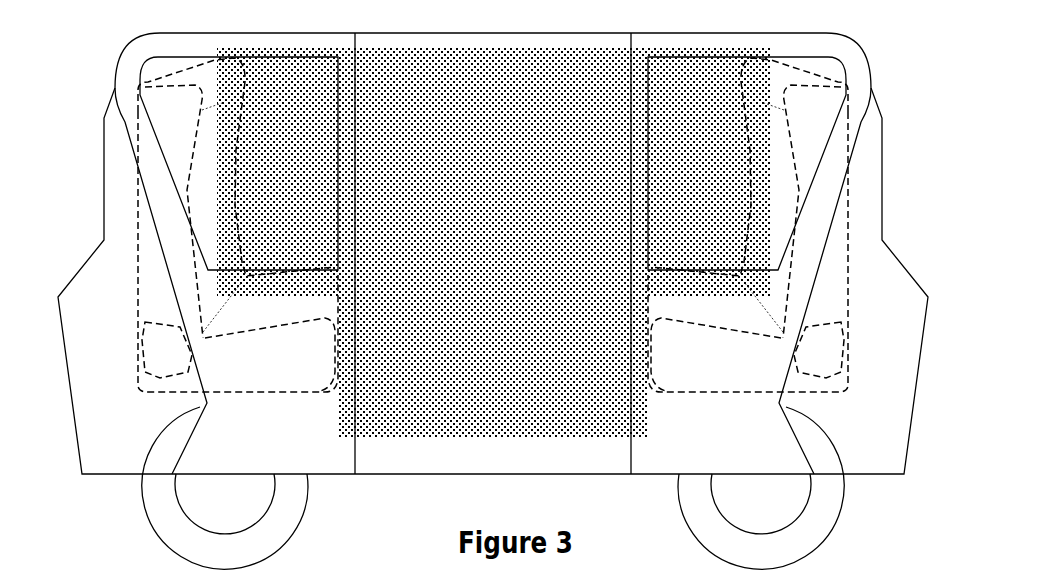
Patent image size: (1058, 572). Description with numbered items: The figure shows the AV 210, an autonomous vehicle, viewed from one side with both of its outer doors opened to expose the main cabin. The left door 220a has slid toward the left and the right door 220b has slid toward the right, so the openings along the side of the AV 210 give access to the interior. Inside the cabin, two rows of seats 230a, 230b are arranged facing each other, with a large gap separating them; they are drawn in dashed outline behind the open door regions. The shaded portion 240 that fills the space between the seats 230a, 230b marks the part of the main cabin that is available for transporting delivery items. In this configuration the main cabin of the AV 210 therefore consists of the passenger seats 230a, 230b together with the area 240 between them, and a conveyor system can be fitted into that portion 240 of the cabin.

The AV 210 is at (838, 35).
The left door 220a is at (187, 37).
The right door 220b is at (692, 40).
The row of seats 230a is at (143, 257).
The row of seats 230b is at (842, 257).
The shaded portion 240 is at (542, 50).